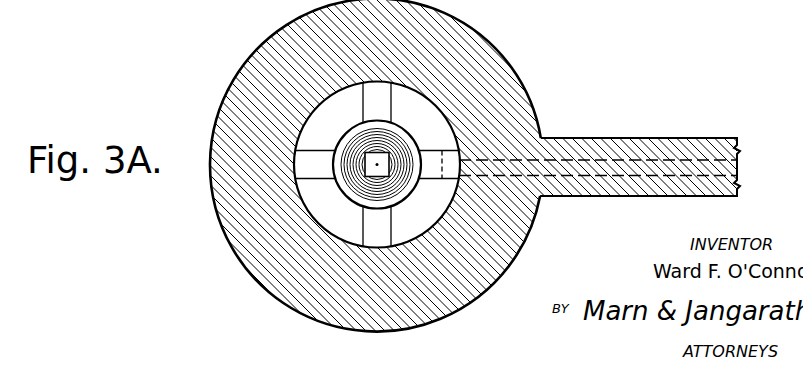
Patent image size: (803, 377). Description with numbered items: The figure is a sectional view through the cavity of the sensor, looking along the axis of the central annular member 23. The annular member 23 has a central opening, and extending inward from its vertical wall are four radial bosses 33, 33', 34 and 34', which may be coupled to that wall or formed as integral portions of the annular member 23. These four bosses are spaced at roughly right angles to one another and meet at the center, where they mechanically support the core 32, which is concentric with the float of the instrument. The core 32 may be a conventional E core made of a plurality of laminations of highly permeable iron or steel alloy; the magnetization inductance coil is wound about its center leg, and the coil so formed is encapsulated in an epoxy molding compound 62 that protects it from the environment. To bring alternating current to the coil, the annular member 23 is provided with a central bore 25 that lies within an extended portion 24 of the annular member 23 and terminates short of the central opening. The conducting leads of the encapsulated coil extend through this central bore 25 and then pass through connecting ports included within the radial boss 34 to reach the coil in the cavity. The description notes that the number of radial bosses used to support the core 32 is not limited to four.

The central annular member 23 is at (230, 207).
The extended portion 24 is at (612, 197).
The central bore 25 is at (613, 161).
The core 32 is at (367, 157).
The radial boss 33 is at (318, 186).
The radial boss 33' is at (398, 225).
The radial boss 34 is at (439, 151).
The radial boss 34' is at (358, 103).
The epoxy molding compound 62 is at (414, 119).